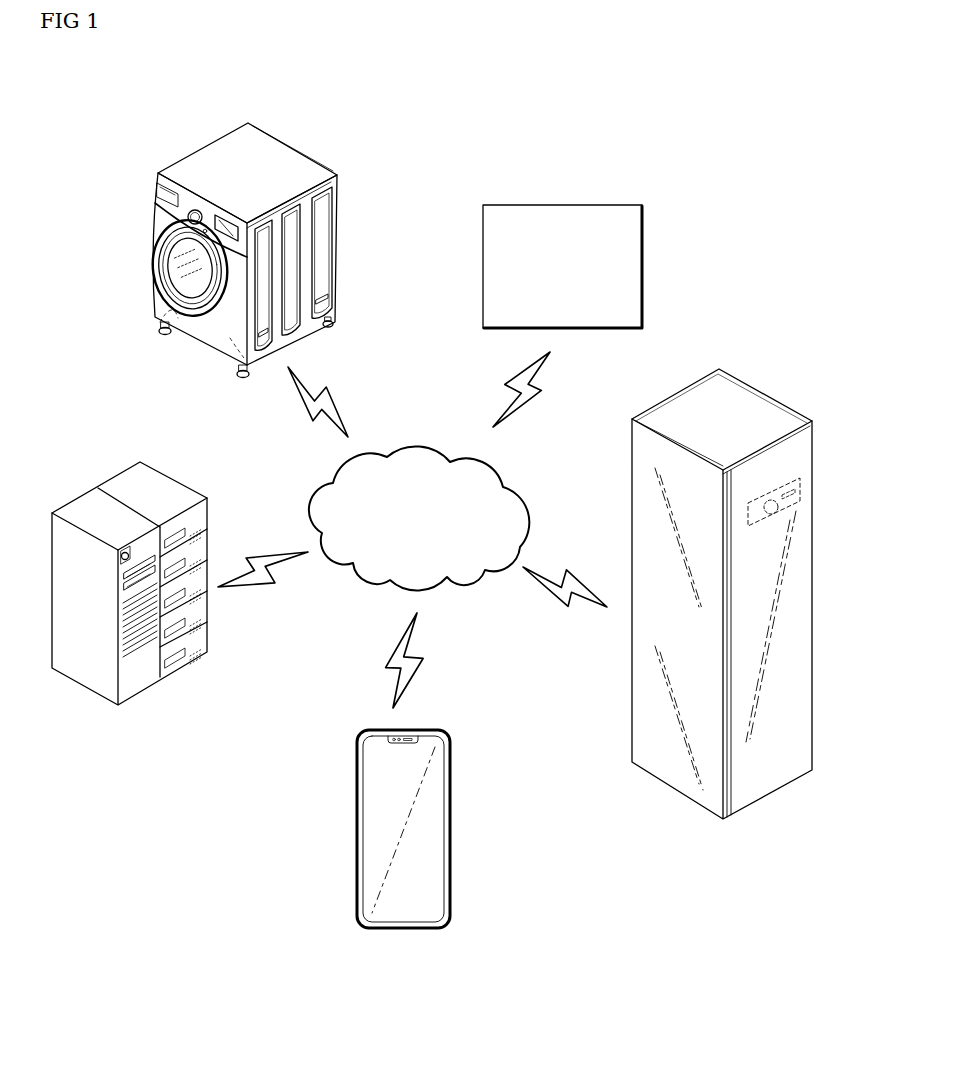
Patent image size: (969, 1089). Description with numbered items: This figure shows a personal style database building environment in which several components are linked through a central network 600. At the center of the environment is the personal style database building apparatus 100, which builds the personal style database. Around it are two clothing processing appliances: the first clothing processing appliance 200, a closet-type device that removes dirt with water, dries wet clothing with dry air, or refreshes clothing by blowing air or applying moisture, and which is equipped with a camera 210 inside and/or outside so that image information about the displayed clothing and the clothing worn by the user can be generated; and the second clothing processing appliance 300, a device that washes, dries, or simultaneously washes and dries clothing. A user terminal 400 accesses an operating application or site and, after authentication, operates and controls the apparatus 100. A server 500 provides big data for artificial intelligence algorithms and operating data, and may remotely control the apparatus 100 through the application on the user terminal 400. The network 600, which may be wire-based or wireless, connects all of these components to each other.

The personal style database building apparatus 100 is at (643, 277).
The first clothing processing appliance 200 is at (743, 580).
The camera 210 is at (790, 487).
The second clothing processing appliance 300 is at (267, 133).
The user terminal 400 is at (452, 826).
The server 500 is at (172, 478).
The network 600 is at (419, 447).